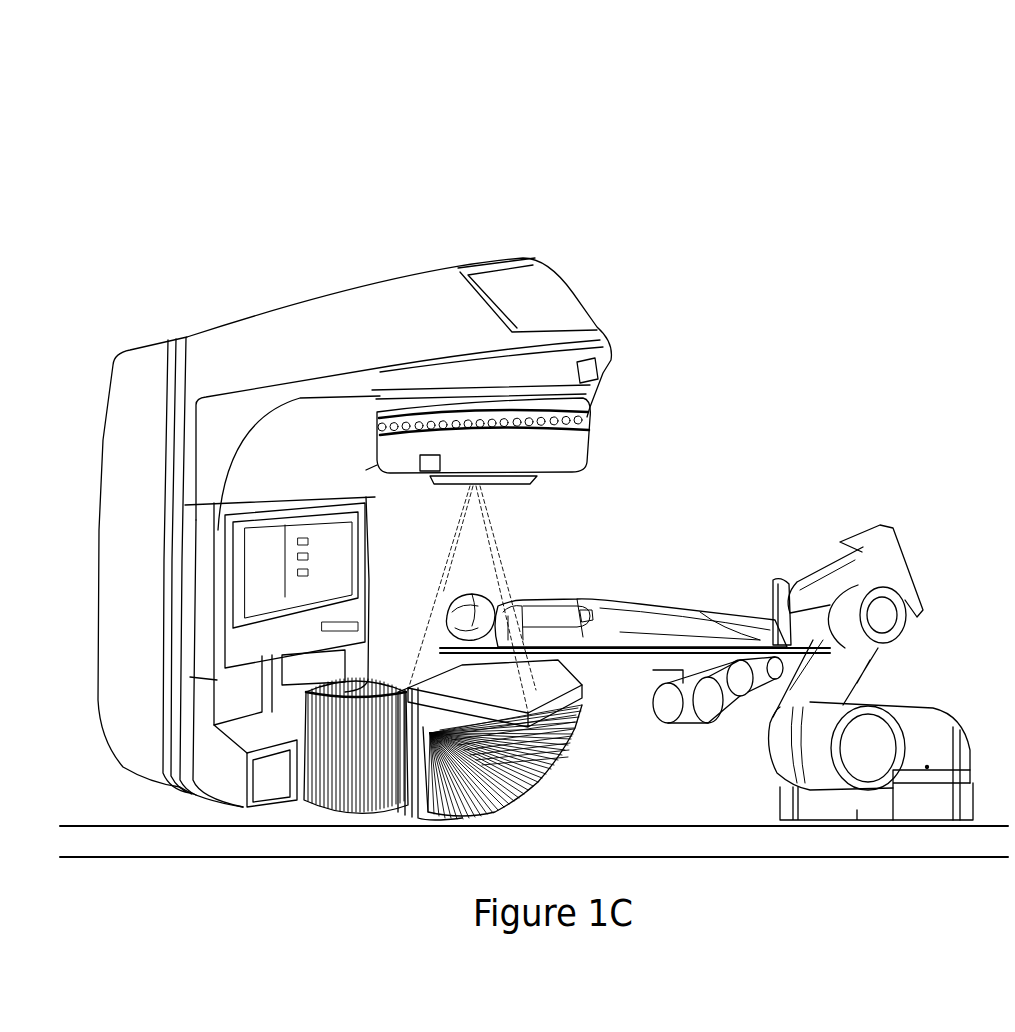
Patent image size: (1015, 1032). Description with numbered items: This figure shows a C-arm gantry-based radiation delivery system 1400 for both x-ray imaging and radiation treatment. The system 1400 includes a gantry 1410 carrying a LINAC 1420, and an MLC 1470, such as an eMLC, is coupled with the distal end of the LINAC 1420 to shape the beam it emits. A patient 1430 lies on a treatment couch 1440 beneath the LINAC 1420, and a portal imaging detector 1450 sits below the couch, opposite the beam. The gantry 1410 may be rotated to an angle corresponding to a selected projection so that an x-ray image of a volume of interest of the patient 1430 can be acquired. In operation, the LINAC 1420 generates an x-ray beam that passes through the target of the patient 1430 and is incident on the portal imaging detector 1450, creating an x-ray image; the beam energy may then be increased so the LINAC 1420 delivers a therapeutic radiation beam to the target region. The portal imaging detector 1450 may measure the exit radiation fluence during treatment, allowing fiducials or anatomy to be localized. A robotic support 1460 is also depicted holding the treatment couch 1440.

The C-arm radiation delivery system 1400 is at (542, 47).
The gantry 1410 is at (338, 296).
The LINAC 1420 is at (590, 410).
The patient 1430 is at (450, 600).
The treatment couch 1440 is at (440, 648).
The portal imaging detector 1450 is at (588, 690).
The robotic arm 1460 is at (905, 542).
The MLC 1470 is at (488, 483).